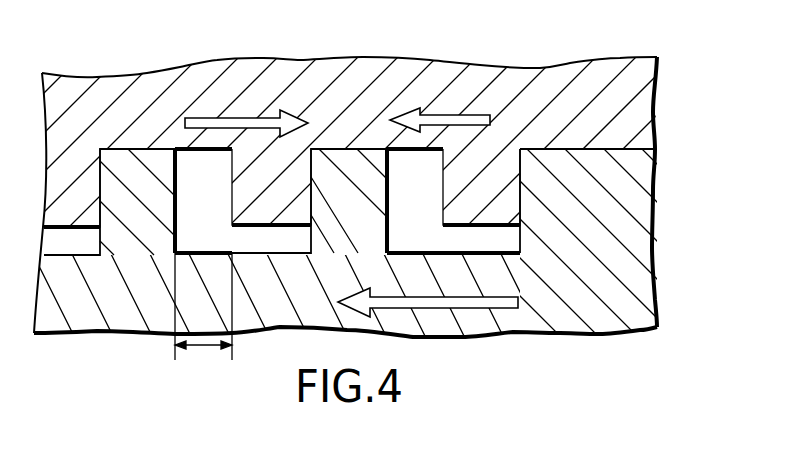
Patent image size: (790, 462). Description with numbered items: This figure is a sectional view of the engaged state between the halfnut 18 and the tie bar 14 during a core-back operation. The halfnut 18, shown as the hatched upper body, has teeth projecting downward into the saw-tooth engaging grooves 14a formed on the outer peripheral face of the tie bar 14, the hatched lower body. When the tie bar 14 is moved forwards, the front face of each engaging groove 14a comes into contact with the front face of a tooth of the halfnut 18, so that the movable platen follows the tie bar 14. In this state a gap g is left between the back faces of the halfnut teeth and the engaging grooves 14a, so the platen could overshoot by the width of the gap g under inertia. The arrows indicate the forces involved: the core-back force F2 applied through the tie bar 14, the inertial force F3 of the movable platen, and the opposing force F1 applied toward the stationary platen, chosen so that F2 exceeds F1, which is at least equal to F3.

The halfnut 18 is at (642, 112).
The tie bar 14 is at (395, 259).
The engaging groove 14a is at (637, 247).
The gap g is at (203, 350).
The force F1 is at (263, 117).
The force F2 is at (445, 302).
The inertial force F3 is at (455, 118).